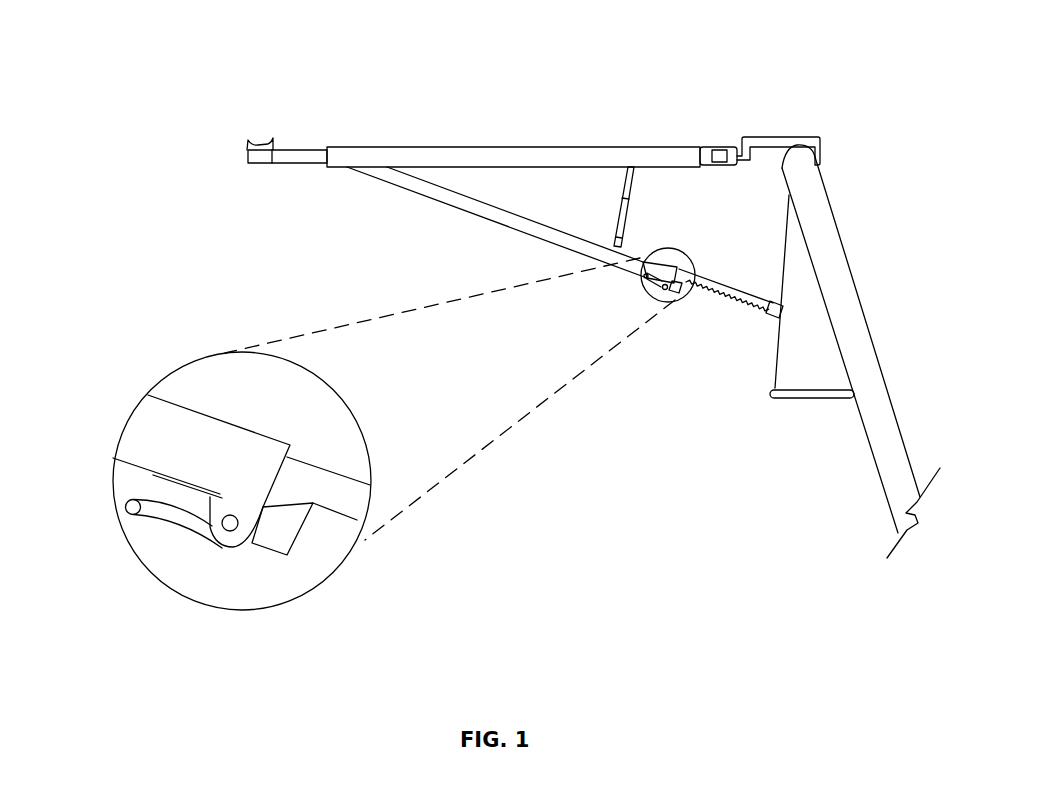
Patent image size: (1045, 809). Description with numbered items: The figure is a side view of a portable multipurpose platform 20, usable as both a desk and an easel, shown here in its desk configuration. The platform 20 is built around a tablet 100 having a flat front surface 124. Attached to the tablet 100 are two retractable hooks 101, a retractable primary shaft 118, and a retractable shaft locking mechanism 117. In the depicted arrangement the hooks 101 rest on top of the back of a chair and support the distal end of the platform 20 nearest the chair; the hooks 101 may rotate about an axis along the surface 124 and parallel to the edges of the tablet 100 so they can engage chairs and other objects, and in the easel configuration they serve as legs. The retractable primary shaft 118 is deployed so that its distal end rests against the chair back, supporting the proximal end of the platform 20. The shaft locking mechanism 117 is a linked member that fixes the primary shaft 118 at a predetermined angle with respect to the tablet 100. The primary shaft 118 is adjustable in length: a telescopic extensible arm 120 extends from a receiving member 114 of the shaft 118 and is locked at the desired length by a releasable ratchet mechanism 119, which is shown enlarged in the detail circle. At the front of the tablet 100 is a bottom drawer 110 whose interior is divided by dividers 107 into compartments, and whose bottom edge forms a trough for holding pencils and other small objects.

The multipurpose platform 20 is at (165, 113).
The tablet 100 is at (520, 147).
The retractable hooks 101 is at (782, 137).
The dividers 107 is at (307, 148).
The bottom drawer 110 is at (247, 140).
The receiving member 114 is at (430, 198).
The retractable shaft locking mechanism 117 is at (632, 190).
The retractable primary shaft 118 is at (518, 229).
The releasable ratchet mechanism 119 is at (210, 543).
The telescopic extensible arm 120 is at (355, 535).
The flat front surface 124 is at (622, 147).